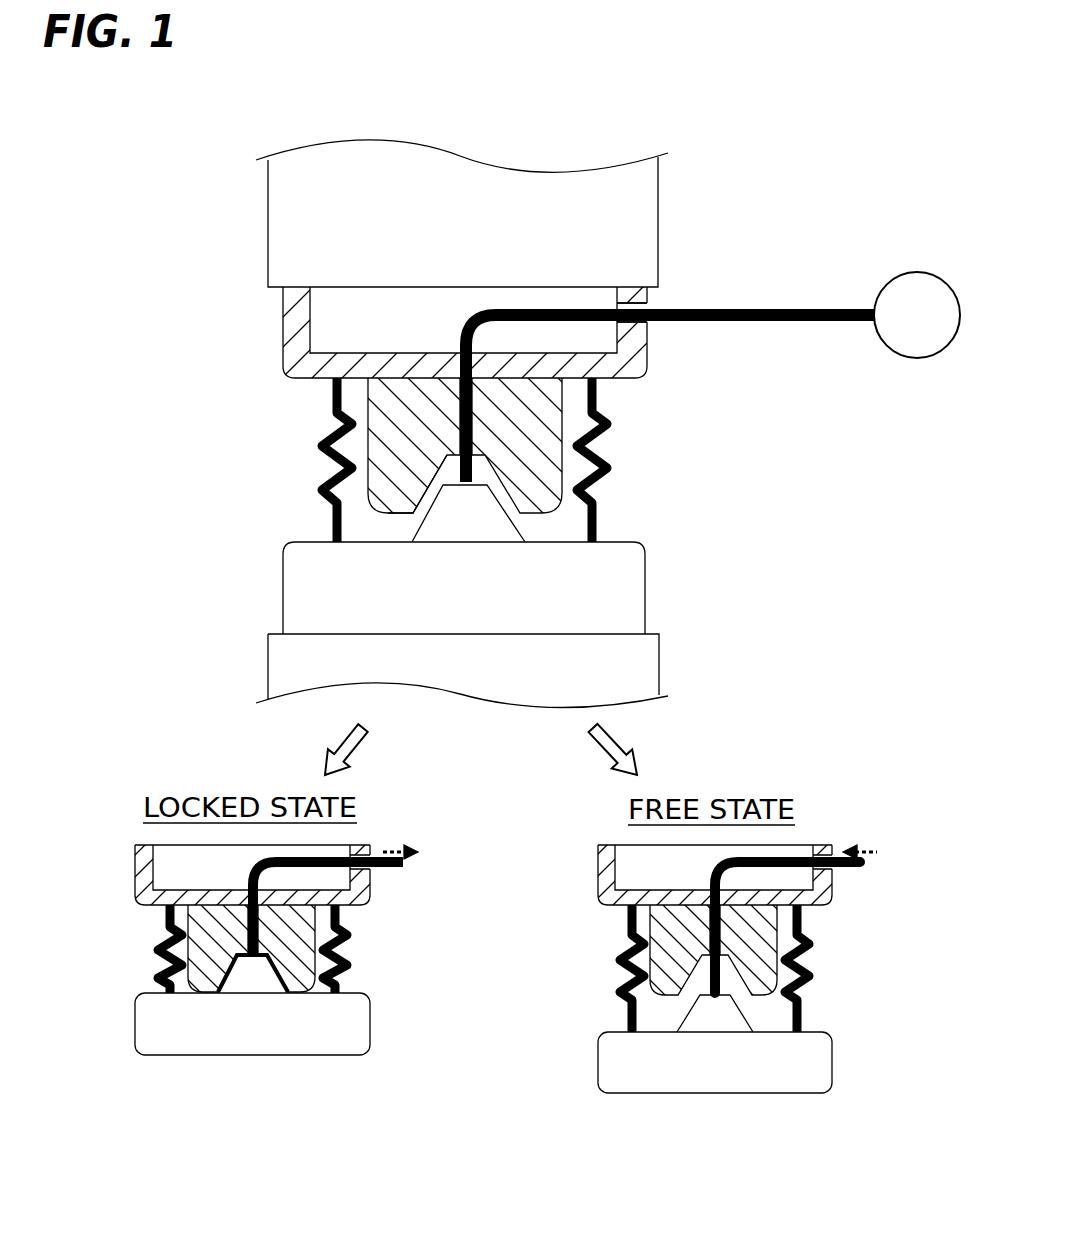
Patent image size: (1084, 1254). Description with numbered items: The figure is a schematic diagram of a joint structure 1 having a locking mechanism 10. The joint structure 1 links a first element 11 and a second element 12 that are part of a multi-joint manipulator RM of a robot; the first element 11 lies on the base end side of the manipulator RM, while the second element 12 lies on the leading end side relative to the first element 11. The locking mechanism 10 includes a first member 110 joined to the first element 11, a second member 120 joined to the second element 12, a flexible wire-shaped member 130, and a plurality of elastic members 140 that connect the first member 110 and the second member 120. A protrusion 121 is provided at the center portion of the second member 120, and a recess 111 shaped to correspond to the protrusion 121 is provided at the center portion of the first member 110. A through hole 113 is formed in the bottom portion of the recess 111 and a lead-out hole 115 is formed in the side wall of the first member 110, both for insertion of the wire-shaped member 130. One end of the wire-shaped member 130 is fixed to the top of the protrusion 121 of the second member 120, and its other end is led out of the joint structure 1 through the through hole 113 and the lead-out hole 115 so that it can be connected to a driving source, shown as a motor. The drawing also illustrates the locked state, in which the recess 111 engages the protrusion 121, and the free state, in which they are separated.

The manipulator RM is at (118, 218).
The joint structure 1 is at (230, 288).
The locking mechanism 10 is at (780, 348).
The first element 11 is at (277, 210).
The second element 12 is at (275, 667).
The first member 110 is at (643, 352).
The lead-out hole 115 is at (648, 306).
The through hole 113 is at (430, 472).
The recess 111 is at (420, 512).
The wire-shaped member 130 is at (472, 470).
The elastic members 140 is at (608, 420).
The second member 120 is at (630, 575).
The protrusion 121 is at (507, 527).